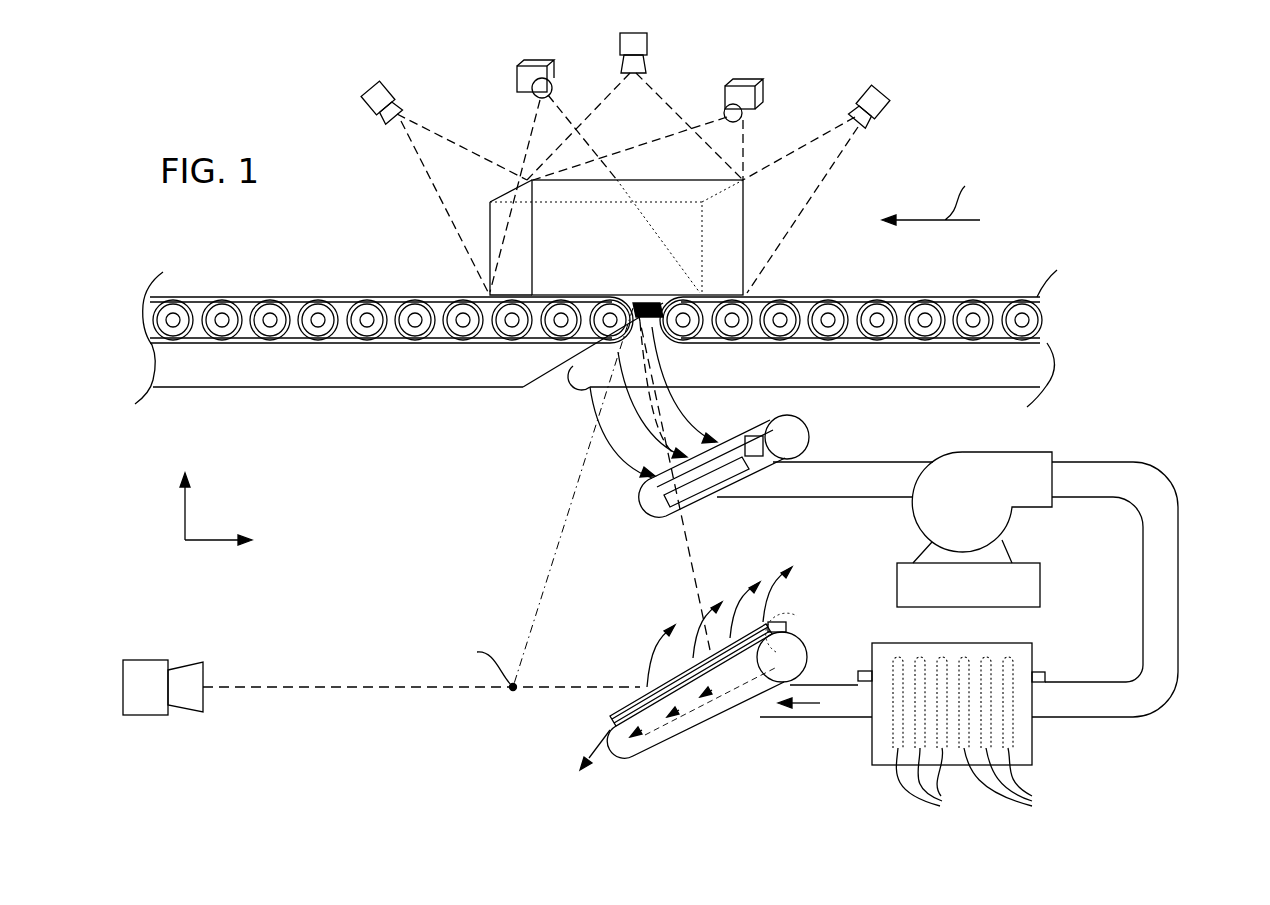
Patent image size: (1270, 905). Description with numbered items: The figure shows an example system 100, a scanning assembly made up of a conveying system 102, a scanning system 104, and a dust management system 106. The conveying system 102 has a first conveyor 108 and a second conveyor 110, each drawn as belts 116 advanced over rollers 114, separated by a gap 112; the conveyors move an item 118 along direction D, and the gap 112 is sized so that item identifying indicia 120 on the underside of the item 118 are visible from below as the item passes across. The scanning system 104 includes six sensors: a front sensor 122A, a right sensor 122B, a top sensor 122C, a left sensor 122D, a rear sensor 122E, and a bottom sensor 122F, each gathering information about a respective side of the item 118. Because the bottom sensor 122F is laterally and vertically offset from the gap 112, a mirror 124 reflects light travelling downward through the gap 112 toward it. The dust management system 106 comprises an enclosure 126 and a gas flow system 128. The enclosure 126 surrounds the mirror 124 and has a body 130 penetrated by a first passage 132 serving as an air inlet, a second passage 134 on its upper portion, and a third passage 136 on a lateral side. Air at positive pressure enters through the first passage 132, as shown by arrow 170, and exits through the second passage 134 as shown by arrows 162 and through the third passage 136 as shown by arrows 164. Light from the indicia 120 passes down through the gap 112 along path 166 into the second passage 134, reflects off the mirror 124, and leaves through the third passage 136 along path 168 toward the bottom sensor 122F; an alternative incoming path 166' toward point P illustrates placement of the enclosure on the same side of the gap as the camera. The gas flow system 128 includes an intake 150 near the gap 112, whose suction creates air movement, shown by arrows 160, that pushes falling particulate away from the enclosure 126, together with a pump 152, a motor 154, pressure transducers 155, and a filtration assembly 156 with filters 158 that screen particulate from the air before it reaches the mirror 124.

The system 100 is at (1012, 125).
The conveying system 102 is at (264, 279).
The scanning system 104 is at (344, 74).
The dust management system 106 is at (1098, 428).
The first conveyor 108 is at (853, 295).
The second conveyor 110 is at (430, 296).
The gap 112 is at (543, 413).
The rollers 114 is at (603, 321).
The belts 116 is at (353, 386).
The item 118 is at (616, 237).
The item identifying indicia 120 is at (643, 302).
The front sensor 122A is at (363, 104).
The right sensor 122B is at (517, 78).
The top sensor 122C is at (620, 42).
The left sensor 122D is at (756, 84).
The rear sensor 122E is at (888, 95).
The bottom sensor 122F is at (148, 660).
The mirror 124 is at (790, 618).
The enclosure 126 is at (647, 758).
The gas flow system 128 is at (1175, 463).
The body 130 is at (808, 645).
The first passage 132 is at (757, 722).
The second passage 134 is at (648, 685).
The third passage 136 is at (608, 725).
The intake 150 is at (810, 448).
The pump 152 is at (982, 502).
The motor 154 is at (968, 573).
The pressure transducers 155 is at (1048, 677).
The filtration assembly 156 is at (1035, 740).
The filters 158 is at (982, 780).
The air movement arrows 160 is at (655, 432).
The gas flow arrows 162 is at (800, 585).
The gas flow arrows 164 is at (590, 755).
The path 166 is at (703, 481).
The incoming path 166' is at (553, 497).
The path 168 is at (272, 687).
The arrow 170 is at (813, 705).